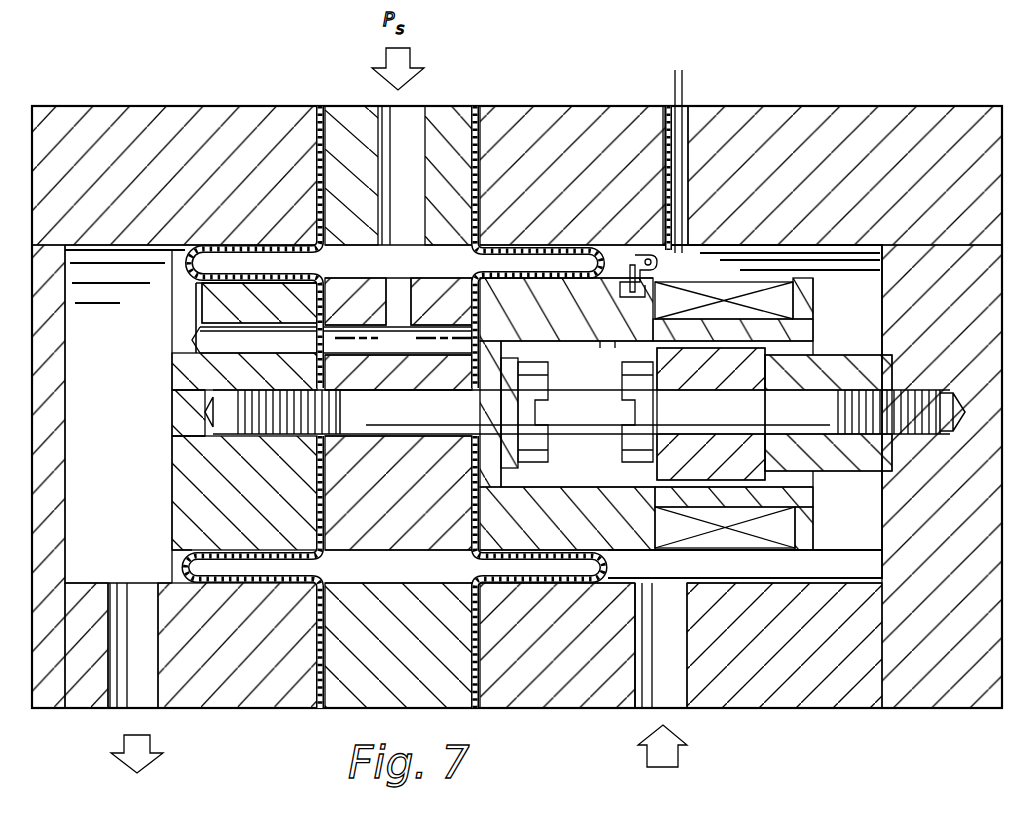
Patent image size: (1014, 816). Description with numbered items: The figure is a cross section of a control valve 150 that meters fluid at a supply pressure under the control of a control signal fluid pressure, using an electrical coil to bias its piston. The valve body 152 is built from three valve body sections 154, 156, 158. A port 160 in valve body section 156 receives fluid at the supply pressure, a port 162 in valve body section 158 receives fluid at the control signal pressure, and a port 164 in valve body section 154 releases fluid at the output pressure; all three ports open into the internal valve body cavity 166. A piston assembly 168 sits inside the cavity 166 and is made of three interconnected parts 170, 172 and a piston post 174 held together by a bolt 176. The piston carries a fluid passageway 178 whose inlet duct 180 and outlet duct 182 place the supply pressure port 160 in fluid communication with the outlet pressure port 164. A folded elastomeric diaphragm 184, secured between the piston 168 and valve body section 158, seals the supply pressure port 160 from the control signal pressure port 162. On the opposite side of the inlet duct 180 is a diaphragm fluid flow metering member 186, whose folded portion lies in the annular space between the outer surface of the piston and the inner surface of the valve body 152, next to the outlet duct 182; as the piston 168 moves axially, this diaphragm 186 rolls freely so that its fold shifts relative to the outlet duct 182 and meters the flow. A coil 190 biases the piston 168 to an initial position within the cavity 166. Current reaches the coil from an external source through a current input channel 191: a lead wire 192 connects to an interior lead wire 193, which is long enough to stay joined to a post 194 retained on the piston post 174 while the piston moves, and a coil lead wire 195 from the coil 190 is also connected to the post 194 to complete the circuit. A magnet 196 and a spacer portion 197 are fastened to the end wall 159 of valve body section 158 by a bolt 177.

The valve 150 is at (511, 89).
The valve body 152 is at (236, 108).
The valve body section 154 is at (187, 112).
The valve body section 156 is at (448, 110).
The valve body section 158 is at (771, 112).
The end wall 159 is at (681, 411).
The port 160 is at (356, 108).
The port 162 is at (672, 695).
The port 164 is at (145, 695).
The valve body cavity 166 is at (125, 416).
The piston assembly 168 is at (338, 560).
The piston part 170 is at (175, 443).
The piston part 172 is at (400, 530).
The piston post 174 is at (805, 525).
The bolt 176 is at (549, 400).
The bolt 177 is at (625, 443).
The fluid passageway 178 is at (200, 343).
The inlet duct 180 is at (408, 313).
The outlet duct 182 is at (200, 305).
The diaphragm 184 is at (610, 580).
The diaphragm fluid flow metering member 186 is at (178, 588).
The coil 190 is at (780, 298).
The current input channel 191 is at (656, 256).
The lead wire 192 is at (685, 75).
The interior lead wire 193 is at (640, 262).
The post 194 is at (603, 345).
The coil lead wire 195 is at (616, 350).
The magnet 196 is at (850, 455).
The spacer portion 197 is at (790, 362).